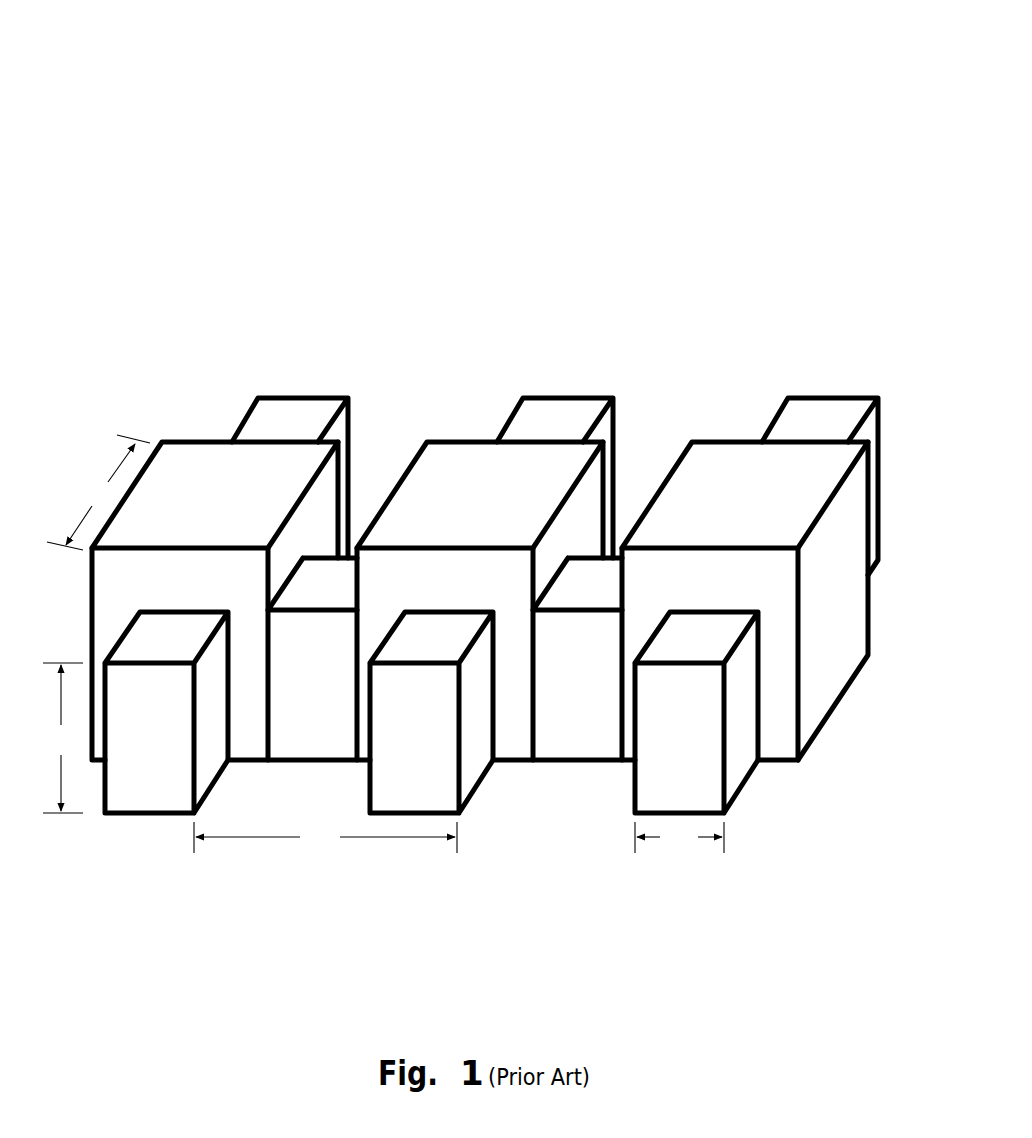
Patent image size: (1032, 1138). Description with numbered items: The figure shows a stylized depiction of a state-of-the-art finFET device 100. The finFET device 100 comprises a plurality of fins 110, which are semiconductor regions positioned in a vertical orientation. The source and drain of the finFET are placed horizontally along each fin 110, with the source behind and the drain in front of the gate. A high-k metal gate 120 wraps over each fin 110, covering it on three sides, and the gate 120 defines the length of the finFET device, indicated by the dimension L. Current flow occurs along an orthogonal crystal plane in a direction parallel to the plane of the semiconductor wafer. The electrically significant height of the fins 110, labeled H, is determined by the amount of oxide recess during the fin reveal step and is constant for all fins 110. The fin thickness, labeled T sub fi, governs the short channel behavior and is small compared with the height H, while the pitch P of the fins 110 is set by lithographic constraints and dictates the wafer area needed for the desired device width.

The finFET device 100 is at (837, 87).
The fins 110 is at (303, 398).
The high-k metal gate 120 is at (413, 457).